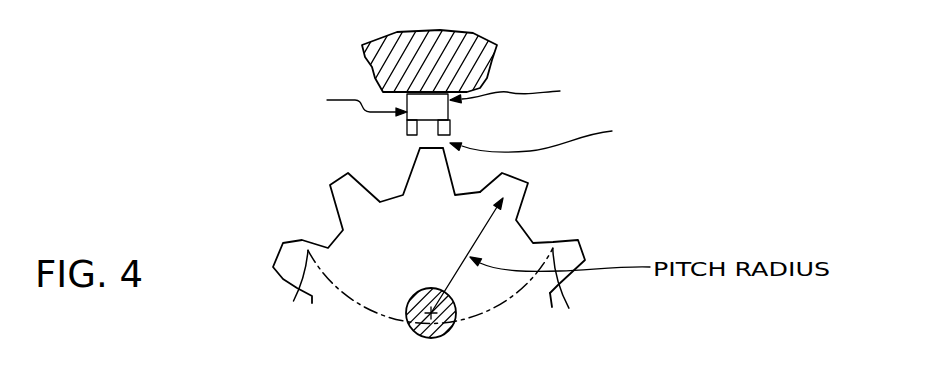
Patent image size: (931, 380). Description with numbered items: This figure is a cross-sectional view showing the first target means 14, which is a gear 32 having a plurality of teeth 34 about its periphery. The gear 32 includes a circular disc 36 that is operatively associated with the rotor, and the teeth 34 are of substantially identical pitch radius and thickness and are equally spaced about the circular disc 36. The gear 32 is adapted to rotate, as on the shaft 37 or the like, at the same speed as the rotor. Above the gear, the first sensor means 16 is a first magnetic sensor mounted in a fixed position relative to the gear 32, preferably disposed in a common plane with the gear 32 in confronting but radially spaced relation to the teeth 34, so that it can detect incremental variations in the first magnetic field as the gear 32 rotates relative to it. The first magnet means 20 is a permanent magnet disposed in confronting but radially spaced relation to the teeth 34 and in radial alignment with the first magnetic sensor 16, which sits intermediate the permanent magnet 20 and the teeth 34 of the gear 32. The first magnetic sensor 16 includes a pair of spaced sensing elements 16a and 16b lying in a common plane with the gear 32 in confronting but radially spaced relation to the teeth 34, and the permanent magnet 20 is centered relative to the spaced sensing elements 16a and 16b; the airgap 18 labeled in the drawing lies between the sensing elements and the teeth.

The permanent magnet 20 is at (430, 98).
The first magnetic sensor 16 is at (462, 110).
The sensing element 16a is at (450, 128).
The sensing element 16b is at (407, 128).
The airgap 18 is at (420, 142).
The first target means 14 is at (563, 219).
The teeth 34 is at (520, 183).
The circular disc 36 is at (527, 292).
The gear 32 is at (323, 319).
The shaft 37 is at (447, 333).